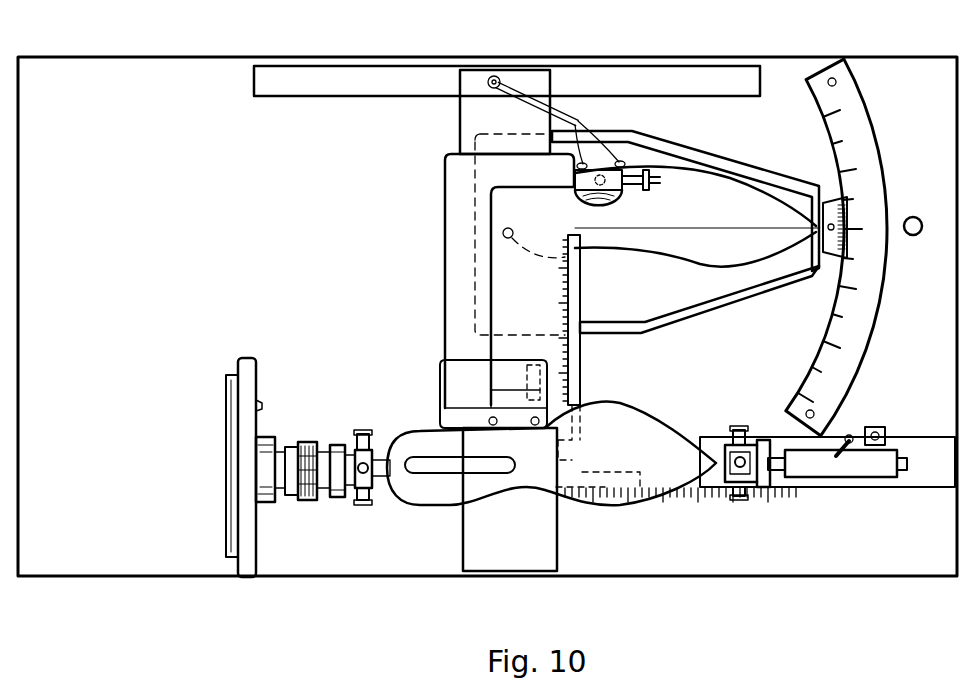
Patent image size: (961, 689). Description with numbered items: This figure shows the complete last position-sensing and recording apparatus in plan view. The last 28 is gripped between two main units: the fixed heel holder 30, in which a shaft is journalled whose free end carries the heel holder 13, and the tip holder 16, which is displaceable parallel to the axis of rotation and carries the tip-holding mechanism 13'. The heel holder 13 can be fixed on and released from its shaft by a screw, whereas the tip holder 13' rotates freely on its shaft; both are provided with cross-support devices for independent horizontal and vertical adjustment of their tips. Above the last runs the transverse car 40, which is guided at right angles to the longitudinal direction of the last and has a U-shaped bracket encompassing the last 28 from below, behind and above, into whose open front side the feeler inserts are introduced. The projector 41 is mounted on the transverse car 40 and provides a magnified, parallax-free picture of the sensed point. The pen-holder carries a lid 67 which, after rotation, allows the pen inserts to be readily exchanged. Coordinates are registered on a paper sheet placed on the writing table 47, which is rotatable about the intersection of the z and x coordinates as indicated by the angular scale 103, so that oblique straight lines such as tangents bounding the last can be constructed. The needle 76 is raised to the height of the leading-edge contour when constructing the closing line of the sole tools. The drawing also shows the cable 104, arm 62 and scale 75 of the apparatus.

The transverse car 40 is at (362, 108).
The cable 104 is at (537, 98).
The lid 67 is at (739, 172).
The upper arm 62 is at (793, 192).
The projector 41 is at (620, 183).
The writing table 47 is at (722, 282).
The angular scale 103 is at (862, 337).
The needle 76 is at (581, 372).
The last 28 is at (650, 443).
The horizontal scale 75 is at (695, 497).
The tip holder 16 is at (835, 487).
The tip-holding mechanism 13' is at (759, 520).
The heel holder 30 is at (248, 568).
The heel holder 13 is at (355, 525).